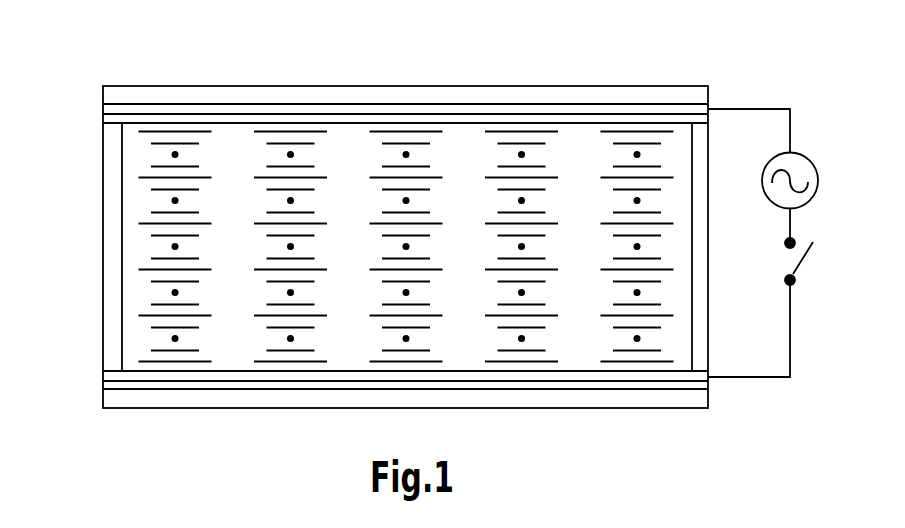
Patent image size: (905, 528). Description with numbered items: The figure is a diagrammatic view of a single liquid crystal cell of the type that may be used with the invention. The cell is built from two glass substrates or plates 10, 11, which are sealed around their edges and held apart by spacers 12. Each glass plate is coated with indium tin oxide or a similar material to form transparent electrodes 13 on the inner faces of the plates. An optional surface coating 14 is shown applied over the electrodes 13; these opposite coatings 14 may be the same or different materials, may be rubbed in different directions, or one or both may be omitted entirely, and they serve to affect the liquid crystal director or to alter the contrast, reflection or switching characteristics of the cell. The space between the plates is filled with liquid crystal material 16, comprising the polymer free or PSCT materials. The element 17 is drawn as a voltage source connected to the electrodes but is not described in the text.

The glass substrate 10 is at (396, 249).
The glass substrate 11 is at (272, 398).
The spacer 12 is at (113, 250).
The transparent electrode 13 is at (118, 103).
The surface coating 14 is at (112, 118).
The liquid crystal material 16 is at (682, 323).
The AC voltage source 17 is at (810, 160).